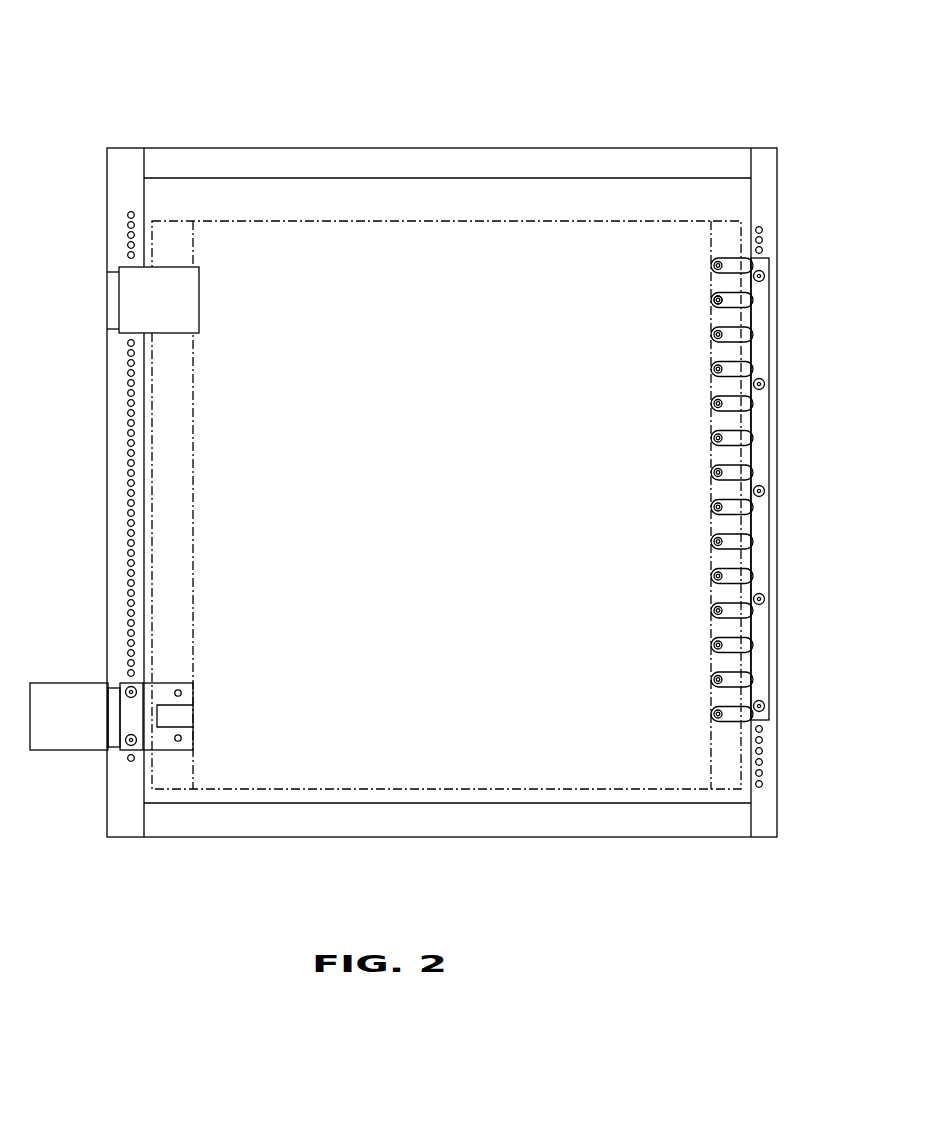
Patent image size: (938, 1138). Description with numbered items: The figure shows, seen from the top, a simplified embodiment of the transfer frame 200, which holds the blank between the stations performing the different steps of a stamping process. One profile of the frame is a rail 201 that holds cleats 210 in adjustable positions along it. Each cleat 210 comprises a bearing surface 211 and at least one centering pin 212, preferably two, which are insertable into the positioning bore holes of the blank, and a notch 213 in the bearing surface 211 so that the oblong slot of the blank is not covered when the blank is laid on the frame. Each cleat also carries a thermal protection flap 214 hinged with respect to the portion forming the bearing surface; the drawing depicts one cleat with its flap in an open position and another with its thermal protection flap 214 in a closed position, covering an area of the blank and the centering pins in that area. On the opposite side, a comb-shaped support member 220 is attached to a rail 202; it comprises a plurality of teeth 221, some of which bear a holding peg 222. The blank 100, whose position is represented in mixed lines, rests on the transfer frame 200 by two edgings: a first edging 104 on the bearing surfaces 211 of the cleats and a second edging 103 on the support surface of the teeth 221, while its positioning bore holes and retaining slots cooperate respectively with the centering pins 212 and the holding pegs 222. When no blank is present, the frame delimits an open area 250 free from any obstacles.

The transfer frame 200 is at (579, 108).
The rail 201 is at (107, 492).
The rail 202 is at (779, 490).
The blank 100 is at (495, 789).
The second edging 103 is at (726, 762).
The first edging 104 is at (173, 418).
The open area 250 is at (470, 520).
The cleat 210 is at (216, 288).
The bearing surface 211 is at (135, 752).
The centering pin 212 is at (186, 738).
The notch 213 is at (162, 716).
The thermal protection flap 214 is at (160, 267).
The comb-shaped support member 220 is at (769, 532).
The teeth 221 is at (762, 231).
The holding peg 222 is at (726, 300).